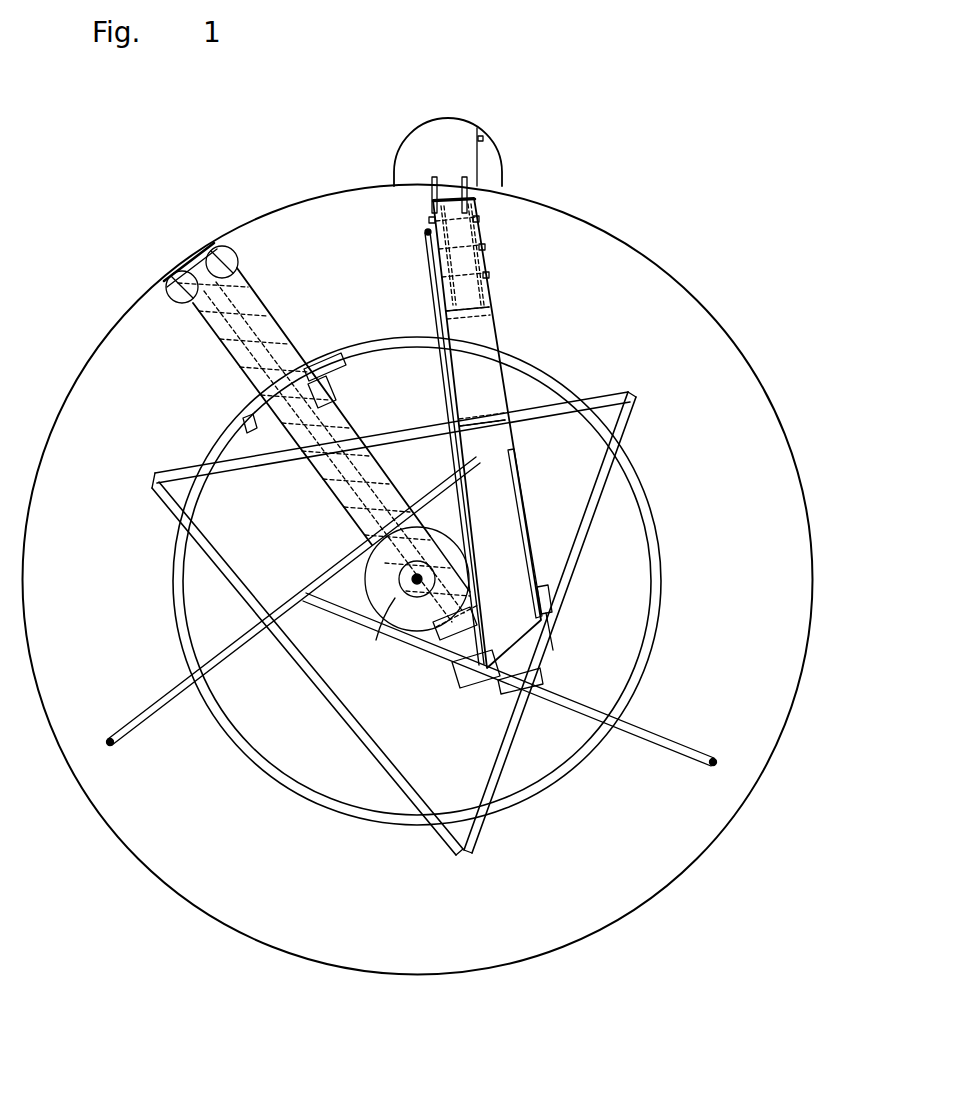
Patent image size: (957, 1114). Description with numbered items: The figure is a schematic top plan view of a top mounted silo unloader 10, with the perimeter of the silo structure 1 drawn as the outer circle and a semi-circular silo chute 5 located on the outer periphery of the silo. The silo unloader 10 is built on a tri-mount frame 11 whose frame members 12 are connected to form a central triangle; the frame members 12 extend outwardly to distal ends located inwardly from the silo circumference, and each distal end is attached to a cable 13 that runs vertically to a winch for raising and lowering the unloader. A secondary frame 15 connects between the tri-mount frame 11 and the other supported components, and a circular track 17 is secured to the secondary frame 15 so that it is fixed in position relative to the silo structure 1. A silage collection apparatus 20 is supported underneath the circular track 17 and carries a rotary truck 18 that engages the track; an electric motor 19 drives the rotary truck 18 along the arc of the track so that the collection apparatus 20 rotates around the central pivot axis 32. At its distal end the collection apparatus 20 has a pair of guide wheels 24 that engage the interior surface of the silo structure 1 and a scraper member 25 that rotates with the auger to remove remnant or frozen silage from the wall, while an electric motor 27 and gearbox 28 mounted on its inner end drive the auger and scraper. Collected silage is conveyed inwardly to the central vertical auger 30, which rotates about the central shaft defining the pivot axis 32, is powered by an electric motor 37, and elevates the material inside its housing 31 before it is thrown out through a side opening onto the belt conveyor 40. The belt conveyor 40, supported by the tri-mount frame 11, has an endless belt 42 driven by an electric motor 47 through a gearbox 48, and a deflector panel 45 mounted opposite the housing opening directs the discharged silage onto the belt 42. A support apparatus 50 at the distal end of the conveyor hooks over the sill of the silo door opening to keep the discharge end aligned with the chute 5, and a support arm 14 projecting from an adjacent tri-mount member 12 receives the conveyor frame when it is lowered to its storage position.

The silo structure 1 is at (650, 256).
The silo chute 5 is at (452, 120).
The silo unloader 10 is at (195, 372).
The tri-mount frame 11 is at (662, 708).
The frame members 12 is at (428, 262).
The cable 13 is at (110, 748).
The support arm 14 is at (493, 314).
The secondary frame 15 is at (640, 432).
The circular track 17 is at (650, 504).
The rotary truck 18 is at (346, 362).
The electric motor 19 is at (334, 390).
The silage collection apparatus 20 is at (172, 248).
The guide wheels 24 is at (222, 246).
The scraper member 25 is at (185, 248).
The electric motor 27 is at (472, 682).
The gearbox 28 is at (436, 650).
The central vertical auger 30 is at (352, 565).
The housing 31 is at (400, 592).
The central pivot axis 32 is at (423, 580).
The electric motor 37 is at (396, 600).
The belt conveyor 40 is at (493, 333).
The endless belt 42 is at (484, 384).
The deflector panel 45 is at (530, 556).
The electric motor 47 is at (546, 678).
The gearbox 48 is at (553, 650).
The support apparatus 50 is at (480, 190).